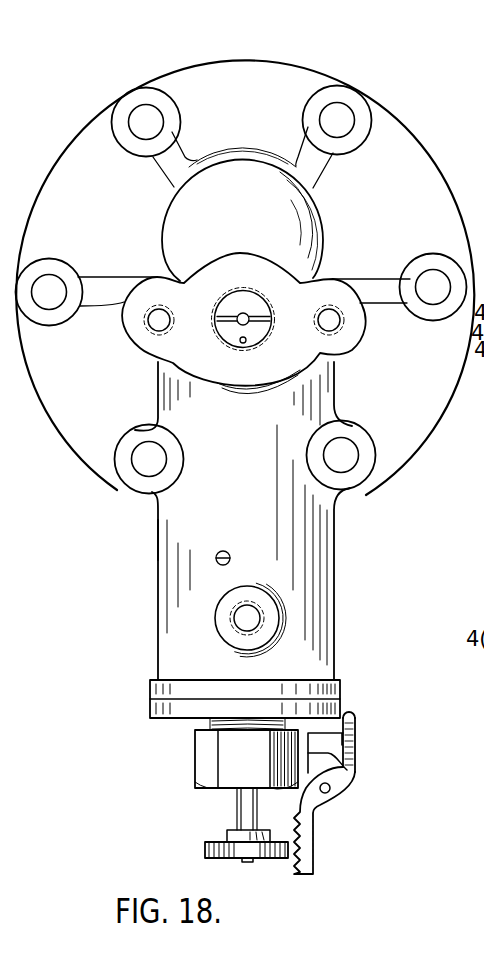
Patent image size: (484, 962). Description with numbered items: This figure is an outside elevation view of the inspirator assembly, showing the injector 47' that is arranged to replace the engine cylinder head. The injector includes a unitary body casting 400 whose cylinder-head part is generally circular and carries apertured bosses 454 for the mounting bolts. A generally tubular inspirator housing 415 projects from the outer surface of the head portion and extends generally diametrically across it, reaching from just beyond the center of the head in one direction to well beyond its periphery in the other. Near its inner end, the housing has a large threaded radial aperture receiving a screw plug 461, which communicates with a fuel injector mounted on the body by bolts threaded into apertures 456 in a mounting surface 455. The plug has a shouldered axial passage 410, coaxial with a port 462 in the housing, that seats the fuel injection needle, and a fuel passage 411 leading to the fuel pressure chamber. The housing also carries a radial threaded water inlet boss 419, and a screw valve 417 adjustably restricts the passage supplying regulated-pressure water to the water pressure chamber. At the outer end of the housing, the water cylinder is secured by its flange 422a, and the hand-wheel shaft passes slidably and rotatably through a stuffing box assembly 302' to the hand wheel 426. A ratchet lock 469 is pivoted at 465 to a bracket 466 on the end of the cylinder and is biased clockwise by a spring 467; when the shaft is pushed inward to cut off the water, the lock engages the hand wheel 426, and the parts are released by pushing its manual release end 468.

The unitary body casting 400 is at (191, 75).
The apertured bosses 454 is at (347, 128).
The mounting surface 455 is at (250, 263).
The shouldered axial passage 410 is at (240, 318).
The port 462 is at (242, 325).
The screw plug 461 is at (263, 330).
The fuel passage 411 is at (247, 341).
The apertures 456 is at (152, 323).
The inspirator housing 415 is at (183, 527).
The screw valve 417 is at (214, 560).
The injector 47' is at (127, 568).
The water inlet boss 419 is at (243, 618).
The flange 422a is at (150, 718).
The stuffing box assembly 302' is at (211, 753).
The hand wheel 426 is at (204, 853).
The manual release end 468 is at (383, 718).
The spring 467 is at (356, 745).
The bracket 466 is at (349, 770).
The pivot 465 is at (328, 792).
The ratchet lock 469 is at (302, 843).